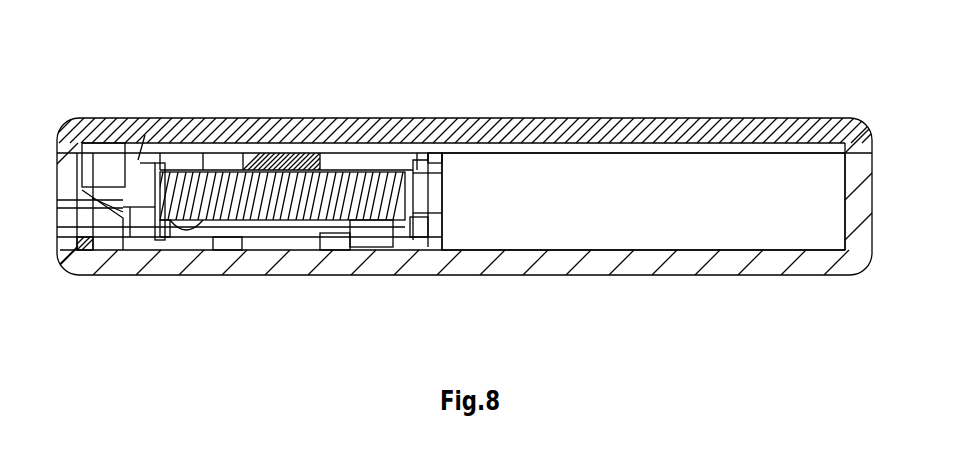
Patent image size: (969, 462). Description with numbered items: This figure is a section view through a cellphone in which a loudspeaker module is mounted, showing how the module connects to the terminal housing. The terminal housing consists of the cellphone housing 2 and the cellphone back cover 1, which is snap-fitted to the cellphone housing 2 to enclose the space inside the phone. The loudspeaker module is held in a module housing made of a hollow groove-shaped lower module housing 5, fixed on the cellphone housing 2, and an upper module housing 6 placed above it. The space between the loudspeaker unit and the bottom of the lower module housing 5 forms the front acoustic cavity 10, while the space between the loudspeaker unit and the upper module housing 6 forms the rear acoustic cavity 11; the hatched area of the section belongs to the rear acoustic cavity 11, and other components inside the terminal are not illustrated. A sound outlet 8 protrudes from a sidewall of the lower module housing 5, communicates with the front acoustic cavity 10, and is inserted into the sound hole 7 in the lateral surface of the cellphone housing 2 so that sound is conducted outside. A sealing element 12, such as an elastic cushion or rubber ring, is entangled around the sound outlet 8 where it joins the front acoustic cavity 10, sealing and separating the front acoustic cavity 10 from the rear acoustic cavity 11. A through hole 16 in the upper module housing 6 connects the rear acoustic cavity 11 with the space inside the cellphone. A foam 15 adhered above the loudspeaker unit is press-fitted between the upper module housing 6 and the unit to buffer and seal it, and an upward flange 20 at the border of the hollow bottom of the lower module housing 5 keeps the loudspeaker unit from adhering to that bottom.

The cellphone back cover 1 is at (464, 141).
The cellphone housing 2 is at (468, 243).
The lower module housing 5 is at (335, 191).
The upper module housing 6 is at (473, 75).
The sound hole 7 is at (132, 272).
The sound outlet 8 is at (92, 292).
The front acoustic cavity 10 is at (279, 266).
The rear acoustic cavity 11 is at (643, 127).
The sealing element 12 is at (249, 136).
The foam 15 is at (288, 94).
The through hole 16 is at (559, 256).
The upward flange 20 is at (324, 286).